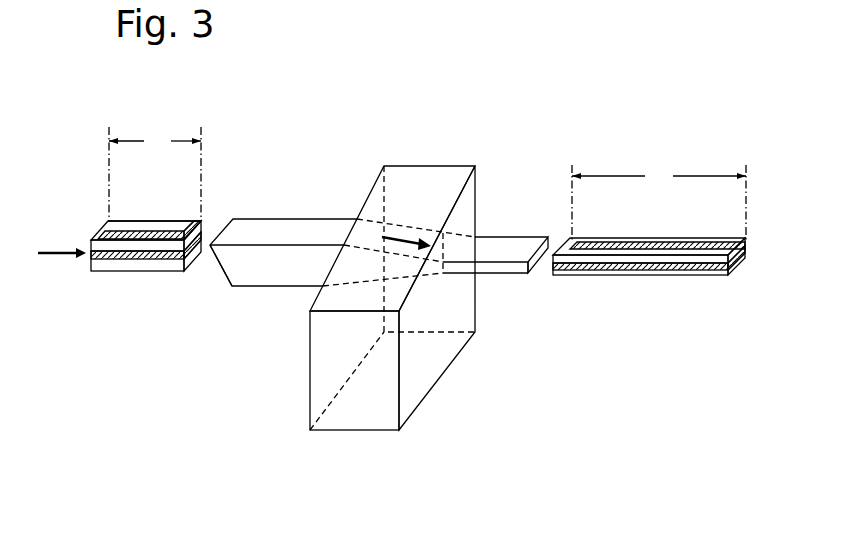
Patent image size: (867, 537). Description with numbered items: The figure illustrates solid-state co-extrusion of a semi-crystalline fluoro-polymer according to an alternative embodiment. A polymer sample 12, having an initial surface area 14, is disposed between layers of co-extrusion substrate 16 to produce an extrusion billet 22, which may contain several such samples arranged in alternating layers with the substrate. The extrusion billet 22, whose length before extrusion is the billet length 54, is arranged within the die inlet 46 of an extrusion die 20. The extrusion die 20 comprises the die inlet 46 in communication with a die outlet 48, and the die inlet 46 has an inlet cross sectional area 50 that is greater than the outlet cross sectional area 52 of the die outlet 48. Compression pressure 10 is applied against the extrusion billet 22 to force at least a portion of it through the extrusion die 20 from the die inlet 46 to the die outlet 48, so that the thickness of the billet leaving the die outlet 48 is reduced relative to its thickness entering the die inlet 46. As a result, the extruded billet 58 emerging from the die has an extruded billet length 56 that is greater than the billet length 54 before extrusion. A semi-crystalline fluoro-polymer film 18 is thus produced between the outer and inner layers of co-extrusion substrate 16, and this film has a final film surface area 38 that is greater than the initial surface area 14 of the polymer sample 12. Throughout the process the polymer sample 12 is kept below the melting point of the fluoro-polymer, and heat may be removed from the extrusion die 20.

The compression pressure 10 is at (52, 250).
The polymer sample 12 is at (90, 256).
The initial surface area 14 is at (140, 259).
The co-extrusion substrate 16 is at (175, 268).
The semi-crystalline fluoro-polymer film 18 is at (742, 264).
The extrusion die 20 is at (429, 203).
The extrusion billet 22 is at (154, 220).
The final film surface area 38 is at (653, 274).
The die inlet 46 is at (268, 225).
The die outlet 48 is at (540, 240).
The inlet cross sectional area 50 is at (217, 267).
The outlet cross sectional area 52 is at (532, 268).
The billet length 54 is at (155, 174).
The extruded billet length 56 is at (659, 202).
The extruded billet 58 is at (618, 258).